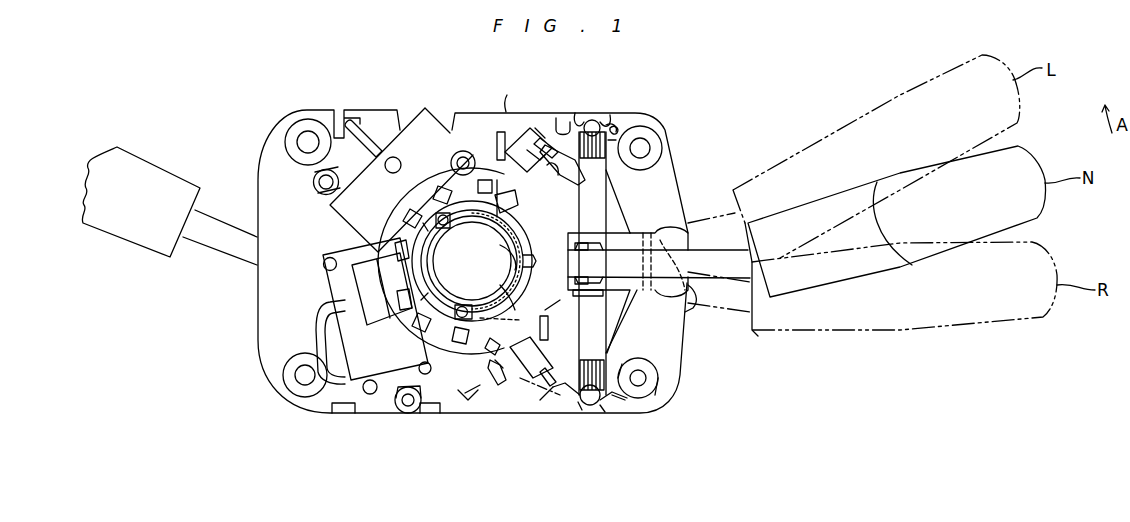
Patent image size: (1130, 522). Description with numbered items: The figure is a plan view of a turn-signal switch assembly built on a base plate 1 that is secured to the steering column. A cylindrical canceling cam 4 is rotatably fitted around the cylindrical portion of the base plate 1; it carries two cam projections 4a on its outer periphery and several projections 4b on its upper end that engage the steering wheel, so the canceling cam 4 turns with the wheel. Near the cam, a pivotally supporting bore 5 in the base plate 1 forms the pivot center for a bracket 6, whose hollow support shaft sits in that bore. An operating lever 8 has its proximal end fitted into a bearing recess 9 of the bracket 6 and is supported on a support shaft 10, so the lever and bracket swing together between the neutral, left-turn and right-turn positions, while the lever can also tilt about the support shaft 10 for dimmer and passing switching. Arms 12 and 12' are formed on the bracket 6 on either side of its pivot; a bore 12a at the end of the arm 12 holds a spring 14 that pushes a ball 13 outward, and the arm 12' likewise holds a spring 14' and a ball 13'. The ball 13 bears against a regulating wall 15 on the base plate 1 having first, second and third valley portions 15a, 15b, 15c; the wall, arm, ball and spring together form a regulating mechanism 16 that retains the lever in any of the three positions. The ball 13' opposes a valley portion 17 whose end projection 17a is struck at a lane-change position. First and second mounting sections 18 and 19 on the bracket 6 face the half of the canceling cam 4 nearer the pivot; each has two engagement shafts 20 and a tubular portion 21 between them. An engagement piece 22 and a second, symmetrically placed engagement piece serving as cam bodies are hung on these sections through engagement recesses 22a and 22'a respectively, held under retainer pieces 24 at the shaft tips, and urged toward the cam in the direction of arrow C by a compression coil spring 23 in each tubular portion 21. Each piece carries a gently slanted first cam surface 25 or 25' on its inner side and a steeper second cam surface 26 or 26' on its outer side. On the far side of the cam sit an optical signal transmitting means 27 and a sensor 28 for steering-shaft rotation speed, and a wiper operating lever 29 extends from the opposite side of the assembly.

The base plate 1 is at (503, 87).
The canceling cam 4 is at (515, 250).
The cam projections 4a is at (541, 252).
The projections 4b is at (462, 306).
The pivotally supporting bore 5 is at (612, 277).
The bracket 6 is at (663, 235).
The operating lever 8 is at (812, 200).
The bearing recess 9 is at (690, 300).
The support shaft 10 is at (657, 297).
The arm 12 is at (623, 322).
The arm 12' is at (629, 201).
The bore 12a is at (610, 130).
The ball 13 is at (578, 397).
The ball 13' is at (596, 109).
The spring 14 is at (590, 357).
The spring 14' is at (591, 263).
The regulating wall 15 is at (572, 402).
The first valley portion 15a is at (602, 410).
The second valley portion 15b is at (620, 400).
The third valley portion 15c is at (562, 400).
The regulating mechanism 16 is at (580, 410).
The valley portion 17 is at (575, 118).
The projection 17a is at (556, 115).
The first mounting section 18 is at (530, 140).
The second mounting section 19 is at (468, 395).
The engagement shafts 20 is at (484, 150).
The tubular portion 21 is at (530, 143).
The engagement piece 22 is at (421, 264).
The engagement recesses 22a is at (541, 232).
The engagement recesses 22'a is at (522, 342).
The compression coil spring 23 is at (535, 128).
The retainer pieces 24 is at (505, 142).
The first cam surface 25 is at (519, 237).
The first cam surface 25' is at (518, 296).
The second cam surface 26 is at (447, 262).
The second cam surface 26' is at (448, 290).
The optical signal transmitting means 27 is at (408, 150).
The sensor 28 is at (368, 350).
The wiper operating lever 29 is at (138, 182).
The arrow C is at (500, 330).